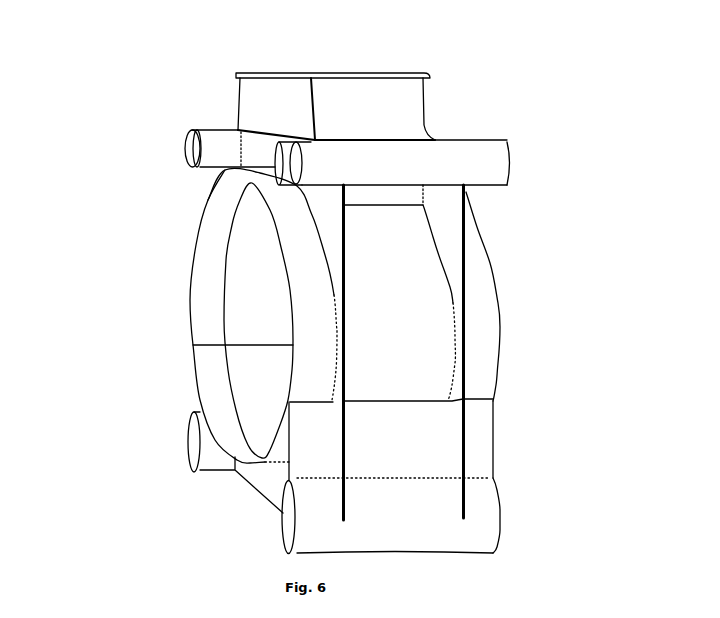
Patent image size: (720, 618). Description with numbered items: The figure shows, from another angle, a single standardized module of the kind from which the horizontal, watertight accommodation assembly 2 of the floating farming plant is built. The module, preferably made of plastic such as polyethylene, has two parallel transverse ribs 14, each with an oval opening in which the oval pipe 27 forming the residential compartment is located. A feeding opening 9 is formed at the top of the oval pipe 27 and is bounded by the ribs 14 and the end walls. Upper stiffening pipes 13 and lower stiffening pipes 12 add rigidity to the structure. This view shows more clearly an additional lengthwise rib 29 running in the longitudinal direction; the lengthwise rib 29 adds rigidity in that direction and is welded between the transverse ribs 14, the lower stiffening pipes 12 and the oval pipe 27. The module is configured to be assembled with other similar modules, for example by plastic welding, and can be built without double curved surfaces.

The feeding opening 9 is at (338, 73).
The upper stiffening pipes 13 is at (183, 148).
The oval pipe 27 is at (217, 307).
The accommodation assembly 2 is at (406, 314).
The ribs 14 is at (340, 213).
The lengthwise rib 29 is at (477, 439).
The lower stiffening pipes 12 is at (195, 442).